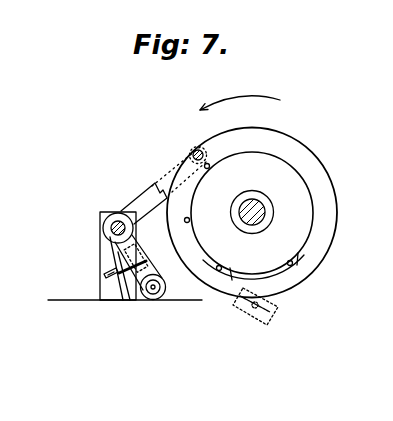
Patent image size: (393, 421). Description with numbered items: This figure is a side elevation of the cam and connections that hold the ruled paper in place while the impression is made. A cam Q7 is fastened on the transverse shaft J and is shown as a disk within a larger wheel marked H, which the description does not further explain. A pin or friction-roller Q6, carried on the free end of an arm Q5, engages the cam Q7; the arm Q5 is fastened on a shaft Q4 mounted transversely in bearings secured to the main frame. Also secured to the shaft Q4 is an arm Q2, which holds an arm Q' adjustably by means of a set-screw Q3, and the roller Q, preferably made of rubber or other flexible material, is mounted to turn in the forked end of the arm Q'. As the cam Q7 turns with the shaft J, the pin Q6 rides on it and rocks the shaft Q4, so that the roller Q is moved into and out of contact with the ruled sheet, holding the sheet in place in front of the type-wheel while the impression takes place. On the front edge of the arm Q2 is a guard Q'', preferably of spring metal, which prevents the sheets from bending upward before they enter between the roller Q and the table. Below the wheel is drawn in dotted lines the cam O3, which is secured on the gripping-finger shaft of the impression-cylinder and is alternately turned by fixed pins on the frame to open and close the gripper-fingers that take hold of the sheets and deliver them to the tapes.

The wheel H is at (254, 197).
The transverse shaft J is at (266, 213).
The roller Q is at (166, 287).
The arm Q' is at (146, 262).
The guard Q'' is at (114, 285).
The arm Q2 is at (141, 252).
The set-screw Q3 is at (100, 270).
The shaft Q4 is at (106, 231).
The arm Q5 is at (149, 192).
The pin or friction-roller Q6 is at (194, 152).
The cam Q7 is at (190, 186).
The cam O3 is at (276, 313).